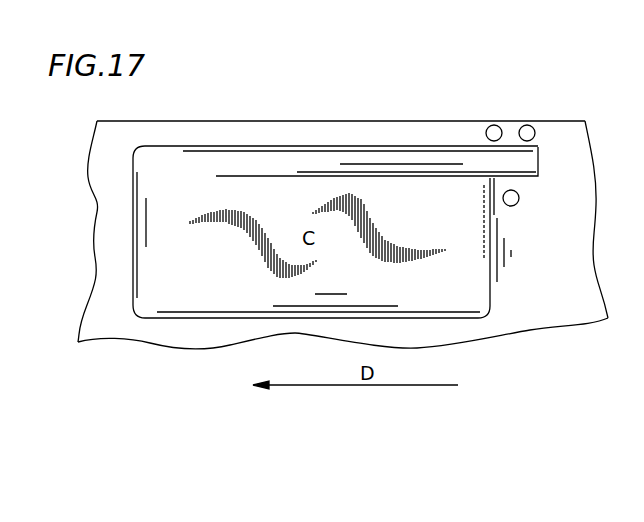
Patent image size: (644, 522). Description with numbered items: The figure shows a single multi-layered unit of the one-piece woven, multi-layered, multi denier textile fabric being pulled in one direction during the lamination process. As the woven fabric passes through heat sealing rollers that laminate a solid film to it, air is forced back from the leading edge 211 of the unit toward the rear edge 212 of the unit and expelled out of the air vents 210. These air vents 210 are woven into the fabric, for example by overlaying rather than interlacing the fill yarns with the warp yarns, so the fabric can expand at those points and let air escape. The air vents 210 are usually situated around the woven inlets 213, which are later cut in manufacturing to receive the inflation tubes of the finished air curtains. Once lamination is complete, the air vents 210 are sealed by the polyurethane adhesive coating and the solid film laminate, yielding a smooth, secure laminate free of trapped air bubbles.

The air vents 210 is at (511, 190).
The leading edge 211 is at (137, 276).
The rear edge 212 is at (496, 268).
The woven inlets 213 is at (538, 160).